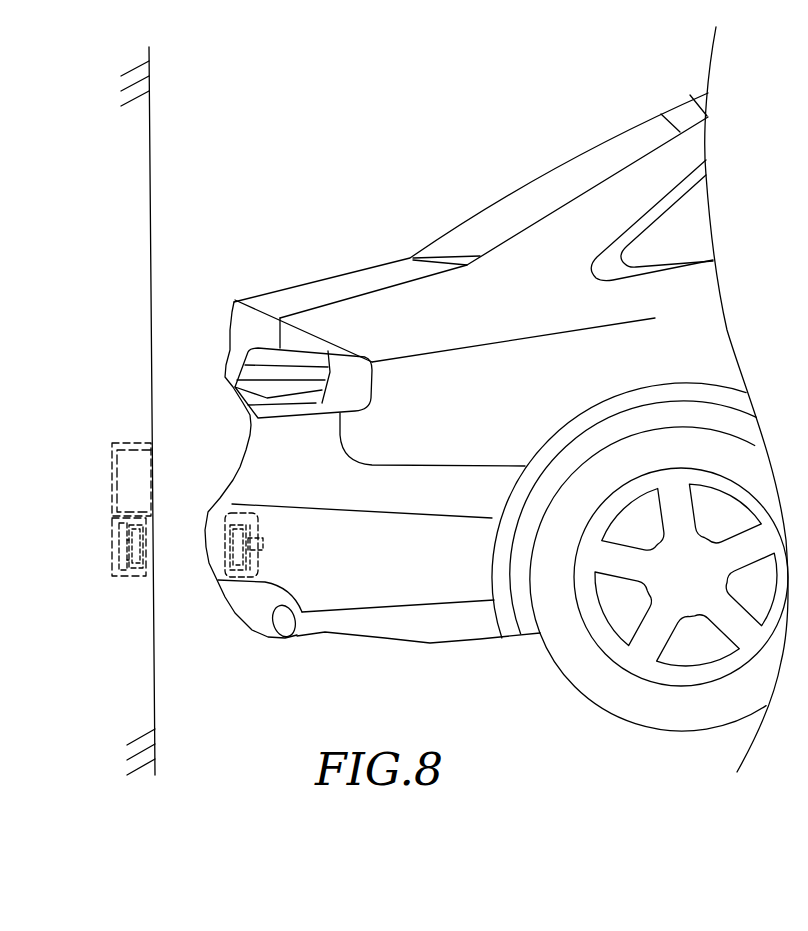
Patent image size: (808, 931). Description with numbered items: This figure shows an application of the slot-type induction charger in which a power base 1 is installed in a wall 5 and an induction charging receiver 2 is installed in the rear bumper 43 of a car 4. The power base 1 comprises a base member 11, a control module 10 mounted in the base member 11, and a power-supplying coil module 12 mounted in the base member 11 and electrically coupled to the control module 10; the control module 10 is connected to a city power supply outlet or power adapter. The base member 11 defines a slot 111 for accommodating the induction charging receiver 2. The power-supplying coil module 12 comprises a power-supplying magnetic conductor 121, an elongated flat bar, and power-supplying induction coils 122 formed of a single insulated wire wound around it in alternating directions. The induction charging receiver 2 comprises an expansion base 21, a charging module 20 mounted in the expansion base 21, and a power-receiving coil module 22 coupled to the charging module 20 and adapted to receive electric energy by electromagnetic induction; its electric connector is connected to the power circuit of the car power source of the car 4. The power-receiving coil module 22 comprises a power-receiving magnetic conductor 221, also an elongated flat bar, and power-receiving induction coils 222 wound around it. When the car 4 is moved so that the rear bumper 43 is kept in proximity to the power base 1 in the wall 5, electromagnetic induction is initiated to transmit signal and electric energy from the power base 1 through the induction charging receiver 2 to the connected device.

The power base 1 is at (94, 502).
The induction charging receiver 2 is at (255, 540).
The car 4 is at (496, 399).
The wall 5 is at (142, 146).
The control module 10 is at (95, 564).
The base member 11 is at (94, 453).
The power-supplying coil module 12 is at (127, 544).
The charging module 20 is at (256, 523).
The expansion base 21 is at (244, 513).
The power-receiving coil module 22 is at (244, 562).
The rear bumper 43 is at (402, 588).
The slot 111 is at (125, 465).
The power-supplying magnetic conductor 121 is at (126, 558).
The power-supplying induction coils 122 is at (114, 577).
The power-receiving magnetic conductor 221 is at (264, 549).
The power-receiving induction coils 222 is at (250, 537).